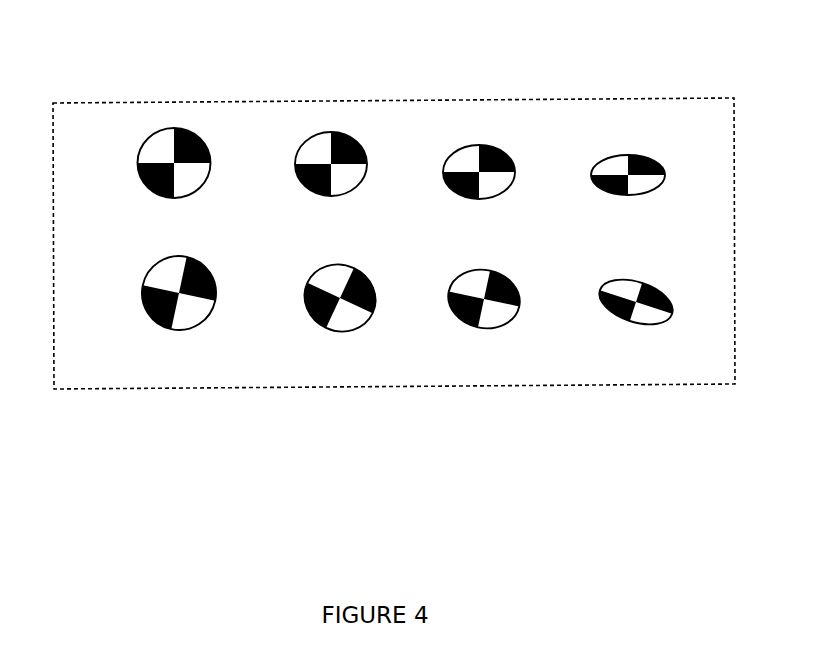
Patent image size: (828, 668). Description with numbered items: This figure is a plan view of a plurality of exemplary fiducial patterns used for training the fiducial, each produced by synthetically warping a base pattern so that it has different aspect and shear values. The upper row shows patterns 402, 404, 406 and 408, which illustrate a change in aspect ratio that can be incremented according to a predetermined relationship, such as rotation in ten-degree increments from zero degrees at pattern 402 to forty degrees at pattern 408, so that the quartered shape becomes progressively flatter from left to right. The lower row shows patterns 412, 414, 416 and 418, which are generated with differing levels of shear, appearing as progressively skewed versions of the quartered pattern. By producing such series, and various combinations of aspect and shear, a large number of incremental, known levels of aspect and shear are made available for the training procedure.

The pattern 402 is at (148, 137).
The pattern 404 is at (315, 135).
The pattern 406 is at (467, 145).
The pattern 408 is at (610, 156).
The pattern 412 is at (183, 332).
The pattern 414 is at (340, 335).
The pattern 416 is at (493, 330).
The pattern 418 is at (653, 325).